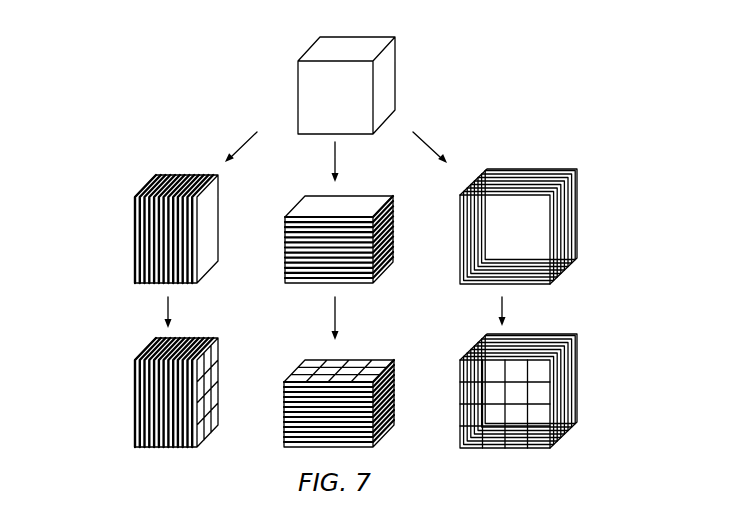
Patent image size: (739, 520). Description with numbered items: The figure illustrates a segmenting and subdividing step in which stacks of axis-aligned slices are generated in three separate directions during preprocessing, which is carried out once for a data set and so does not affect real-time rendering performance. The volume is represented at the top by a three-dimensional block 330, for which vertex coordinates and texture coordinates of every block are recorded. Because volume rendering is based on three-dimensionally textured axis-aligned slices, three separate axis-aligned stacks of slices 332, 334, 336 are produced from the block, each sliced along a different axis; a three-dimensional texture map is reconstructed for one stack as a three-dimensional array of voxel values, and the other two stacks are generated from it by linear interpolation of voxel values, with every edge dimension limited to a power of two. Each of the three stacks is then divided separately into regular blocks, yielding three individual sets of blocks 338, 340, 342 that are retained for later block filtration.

The 3D block 330 is at (388, 87).
The axis-aligned stack of slices 332 is at (135, 233).
The axis-aligned stack of slices 334 is at (378, 200).
The axis-aligned stack of slices 336 is at (577, 218).
The set of blocks 338 is at (135, 397).
The set of blocks 340 is at (378, 362).
The set of blocks 342 is at (577, 383).